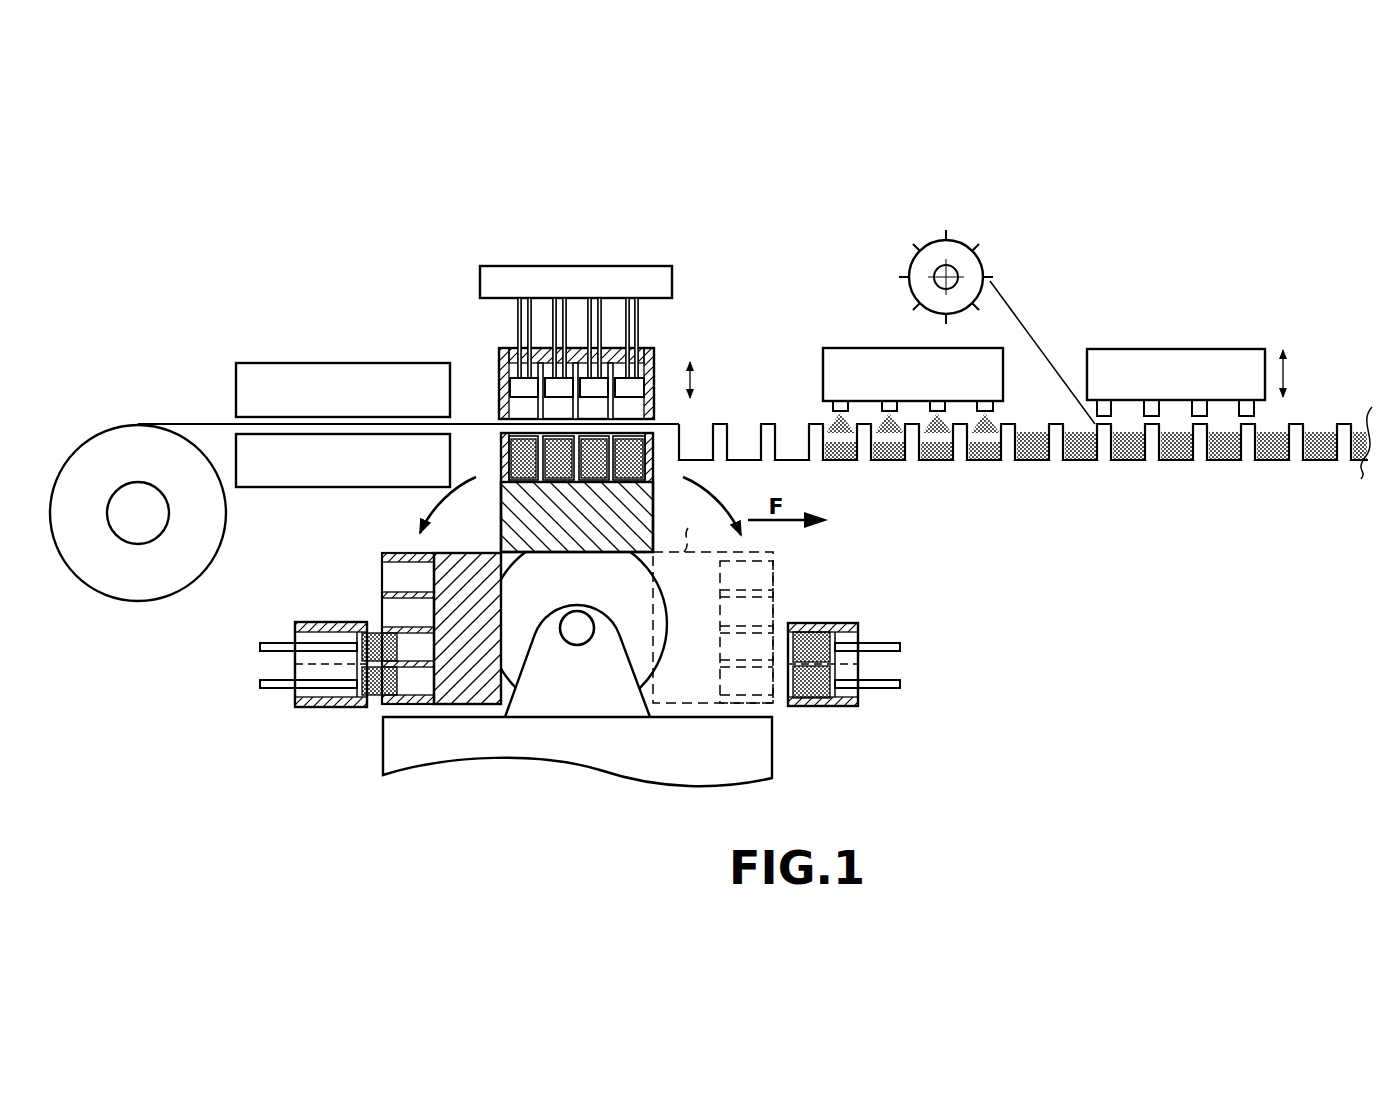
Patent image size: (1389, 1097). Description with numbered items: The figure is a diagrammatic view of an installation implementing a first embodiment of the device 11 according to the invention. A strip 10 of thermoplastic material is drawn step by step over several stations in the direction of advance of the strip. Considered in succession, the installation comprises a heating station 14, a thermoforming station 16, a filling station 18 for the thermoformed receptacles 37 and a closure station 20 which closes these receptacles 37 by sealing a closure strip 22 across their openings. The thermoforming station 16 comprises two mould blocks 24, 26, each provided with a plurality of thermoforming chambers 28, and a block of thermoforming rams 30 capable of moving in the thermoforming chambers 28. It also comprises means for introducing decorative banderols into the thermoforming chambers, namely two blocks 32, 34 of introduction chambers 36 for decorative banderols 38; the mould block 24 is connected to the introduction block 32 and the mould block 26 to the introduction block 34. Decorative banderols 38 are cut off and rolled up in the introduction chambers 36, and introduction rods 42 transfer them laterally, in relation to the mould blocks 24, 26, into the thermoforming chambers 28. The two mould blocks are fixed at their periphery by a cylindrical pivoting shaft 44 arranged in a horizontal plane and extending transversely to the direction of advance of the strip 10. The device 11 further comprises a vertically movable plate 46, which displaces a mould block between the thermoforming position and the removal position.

The strip 10 is at (194, 423).
The device 11 is at (489, 226).
The heating station 14 is at (303, 357).
The thermoforming station 16 is at (627, 263).
The filling station 18 is at (879, 343).
The closure station 20 is at (1162, 347).
The closure strip 22 is at (1010, 326).
The mould block 24 is at (647, 510).
The mould block 26 is at (479, 690).
The thermoforming chambers 28 is at (518, 437).
The block of thermoforming rams 30 is at (679, 346).
The introduction block 32 is at (857, 628).
The introduction block 34 is at (290, 624).
The introduction chambers 36 is at (322, 630).
The thermoformed receptacles 37 is at (784, 461).
The decorative banderols 38 is at (523, 470).
The introduction rods 42 is at (260, 684).
The cylindrical pivoting shaft 44 is at (563, 594).
The plate 46 is at (762, 752).